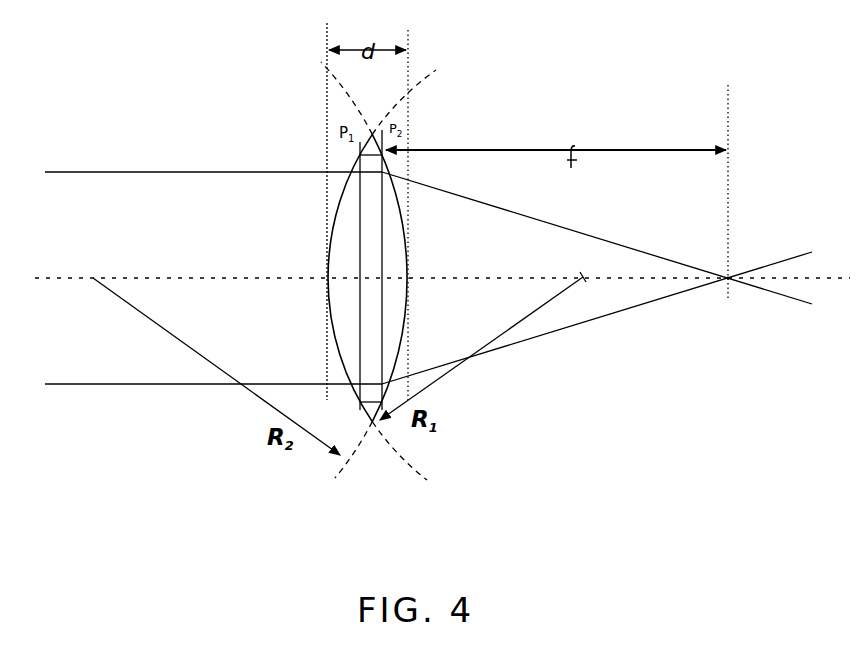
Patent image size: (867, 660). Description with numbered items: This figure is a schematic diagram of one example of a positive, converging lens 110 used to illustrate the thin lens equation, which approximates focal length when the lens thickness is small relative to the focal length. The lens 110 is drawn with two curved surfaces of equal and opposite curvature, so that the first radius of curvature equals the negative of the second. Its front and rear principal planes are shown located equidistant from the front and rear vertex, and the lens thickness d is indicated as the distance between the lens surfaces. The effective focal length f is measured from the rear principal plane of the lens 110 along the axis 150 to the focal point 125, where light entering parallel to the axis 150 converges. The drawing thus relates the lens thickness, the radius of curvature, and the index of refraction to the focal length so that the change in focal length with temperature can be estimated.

The lens 110 is at (341, 250).
The axis 150 is at (442, 268).
The focal point 125 is at (728, 288).